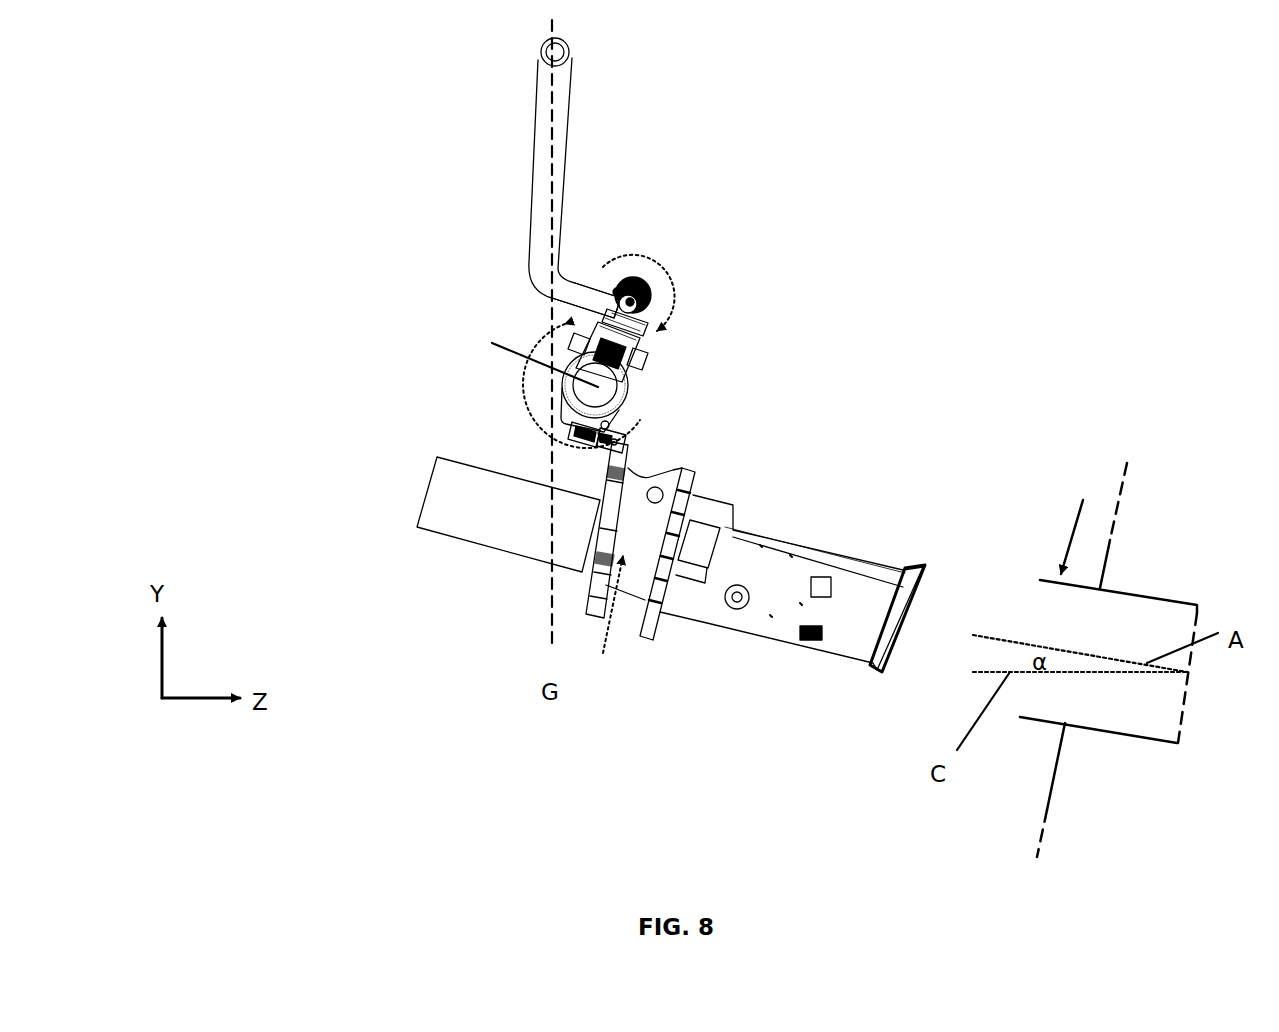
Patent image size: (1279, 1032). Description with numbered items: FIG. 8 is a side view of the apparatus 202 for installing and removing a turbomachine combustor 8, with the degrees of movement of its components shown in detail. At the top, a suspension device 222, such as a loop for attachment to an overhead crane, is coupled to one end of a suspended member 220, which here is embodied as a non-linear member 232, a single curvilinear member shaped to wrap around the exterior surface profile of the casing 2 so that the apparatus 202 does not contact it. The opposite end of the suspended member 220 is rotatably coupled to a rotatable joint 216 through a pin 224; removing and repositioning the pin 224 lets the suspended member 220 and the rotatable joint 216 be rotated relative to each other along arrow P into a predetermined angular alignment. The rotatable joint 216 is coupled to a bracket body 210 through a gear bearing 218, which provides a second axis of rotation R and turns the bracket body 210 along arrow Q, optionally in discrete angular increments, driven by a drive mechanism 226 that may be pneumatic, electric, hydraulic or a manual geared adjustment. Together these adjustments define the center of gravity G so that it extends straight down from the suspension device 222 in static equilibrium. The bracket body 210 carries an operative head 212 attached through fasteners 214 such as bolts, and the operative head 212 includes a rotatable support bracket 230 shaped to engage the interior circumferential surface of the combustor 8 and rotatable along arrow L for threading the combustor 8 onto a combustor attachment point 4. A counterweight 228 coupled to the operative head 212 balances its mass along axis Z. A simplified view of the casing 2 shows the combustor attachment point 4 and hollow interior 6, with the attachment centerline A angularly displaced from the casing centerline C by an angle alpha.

The apparatus 202 is at (436, 347).
The non-linear member 232 is at (552, 167).
The suspension device 222 is at (546, 56).
The suspended member 220 is at (568, 290).
The rotatable joint 216 is at (653, 293).
The pin 224 is at (617, 290).
The drive mechanism 226 is at (643, 363).
The gear bearing 218 is at (563, 393).
The fasteners 214 is at (580, 430).
The operative head 212 is at (613, 433).
The bracket body 210 is at (607, 423).
The rotatable support bracket 230 is at (623, 605).
The counterweight 228 is at (443, 480).
The turbomachine combustor 8 is at (782, 550).
The combustor attachment point 4 is at (1077, 521).
The casing 2 is at (1118, 603).
The hollow interior 6 is at (1098, 779).